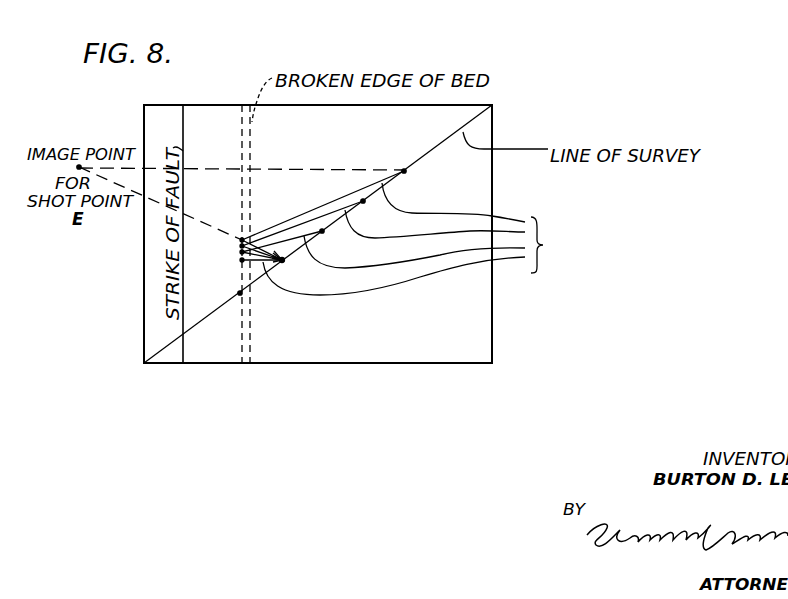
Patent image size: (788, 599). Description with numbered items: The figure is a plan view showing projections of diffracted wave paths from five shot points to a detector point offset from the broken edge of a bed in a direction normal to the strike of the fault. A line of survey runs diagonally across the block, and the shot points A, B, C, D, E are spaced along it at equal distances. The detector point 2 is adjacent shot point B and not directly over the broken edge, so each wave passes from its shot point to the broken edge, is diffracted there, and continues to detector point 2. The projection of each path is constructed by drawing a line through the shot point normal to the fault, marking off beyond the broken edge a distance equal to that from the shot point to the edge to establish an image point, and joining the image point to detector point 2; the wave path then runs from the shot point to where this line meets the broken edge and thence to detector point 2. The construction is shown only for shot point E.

The detector point 2 is at (283, 263).
The shot point A is at (240, 295).
The shot point B is at (293, 492).
The shot point C is at (323, 234).
The shot point D is at (363, 204).
The shot point E is at (404, 174).